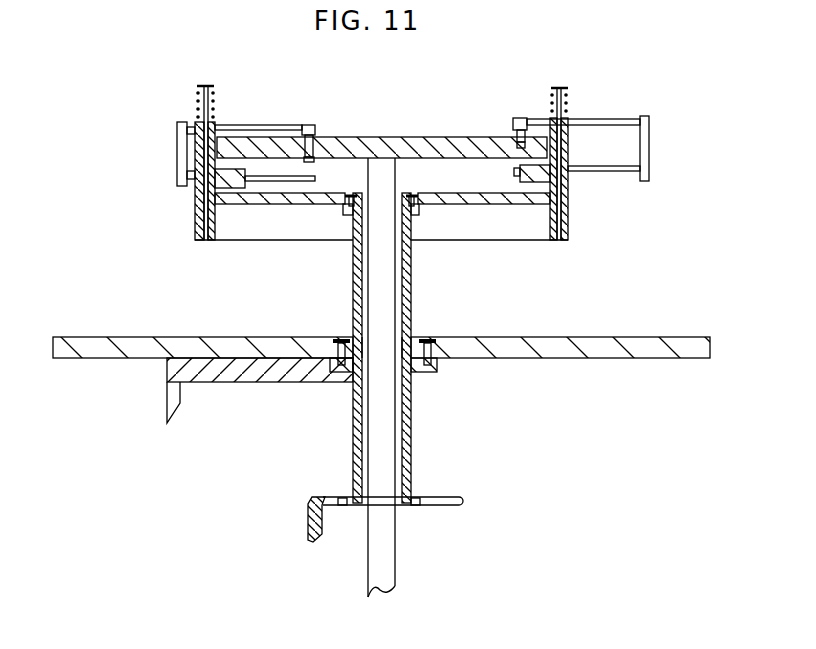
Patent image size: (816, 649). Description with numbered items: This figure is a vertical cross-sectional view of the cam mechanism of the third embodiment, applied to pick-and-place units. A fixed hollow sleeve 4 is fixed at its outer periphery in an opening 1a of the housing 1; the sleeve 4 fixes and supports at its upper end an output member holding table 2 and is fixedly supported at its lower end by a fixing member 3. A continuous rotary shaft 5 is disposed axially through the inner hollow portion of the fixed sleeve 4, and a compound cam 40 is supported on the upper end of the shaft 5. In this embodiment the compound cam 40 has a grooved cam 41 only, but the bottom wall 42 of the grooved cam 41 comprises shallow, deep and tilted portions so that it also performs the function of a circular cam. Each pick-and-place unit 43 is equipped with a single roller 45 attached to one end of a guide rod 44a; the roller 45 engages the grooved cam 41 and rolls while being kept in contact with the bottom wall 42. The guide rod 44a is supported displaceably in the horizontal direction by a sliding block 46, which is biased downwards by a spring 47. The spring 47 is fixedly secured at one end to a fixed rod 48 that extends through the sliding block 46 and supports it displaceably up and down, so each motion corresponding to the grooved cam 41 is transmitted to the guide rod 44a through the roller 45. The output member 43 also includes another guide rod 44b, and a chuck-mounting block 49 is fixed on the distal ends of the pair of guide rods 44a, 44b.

The housing 1 is at (248, 370).
The opening 1a is at (400, 348).
The output member holding table 2 is at (488, 198).
The fixing member 3 is at (455, 502).
The fixed hollow sleeve 4 is at (413, 410).
The continuous rotary shaft 5 is at (380, 567).
The compound cam 40 is at (405, 138).
The grooved cam 41 is at (315, 150).
The bottom wall 42 is at (316, 161).
The pick-and-place unit 43 is at (188, 115).
The guide rod 44a is at (258, 126).
The guide rod 44b is at (316, 178).
The roller 45 is at (303, 133).
The sliding block 46 is at (228, 180).
The fixed rod 48 is at (206, 167).
The spring 47 is at (212, 88).
The chuck-mounting block 49 is at (183, 130).